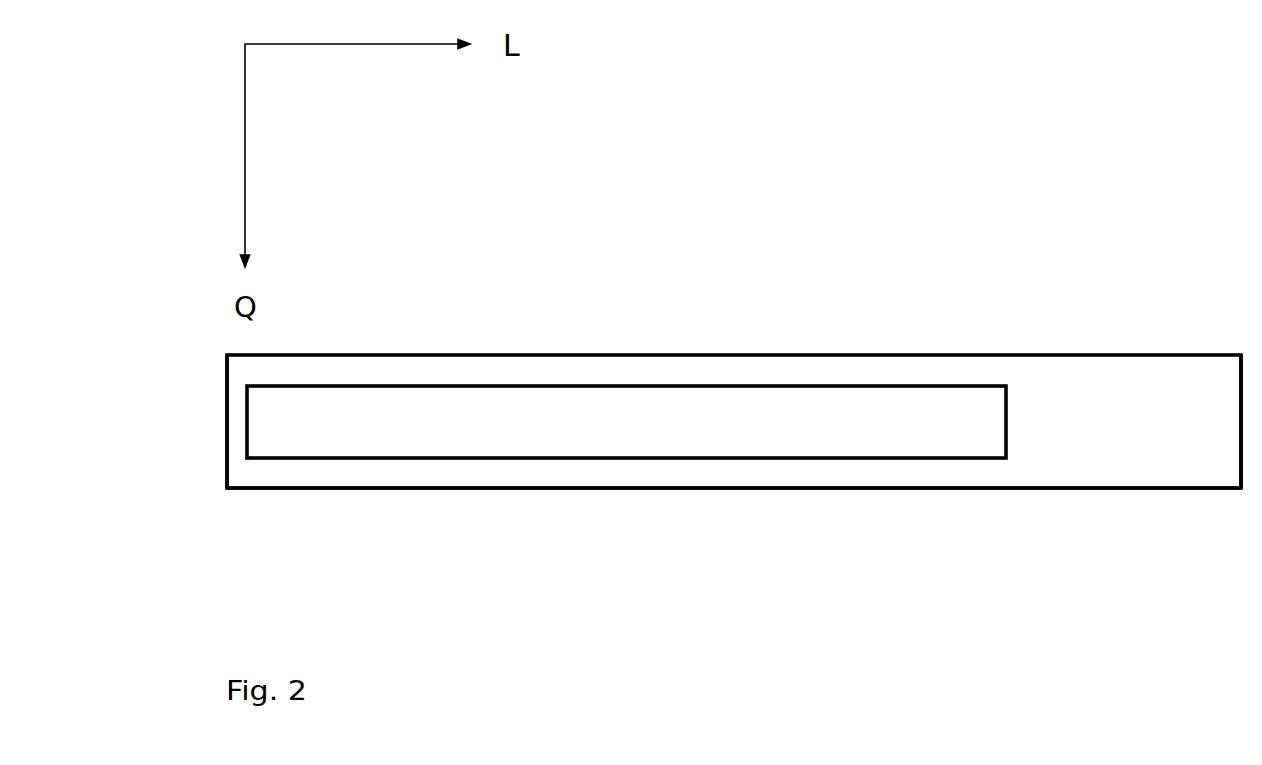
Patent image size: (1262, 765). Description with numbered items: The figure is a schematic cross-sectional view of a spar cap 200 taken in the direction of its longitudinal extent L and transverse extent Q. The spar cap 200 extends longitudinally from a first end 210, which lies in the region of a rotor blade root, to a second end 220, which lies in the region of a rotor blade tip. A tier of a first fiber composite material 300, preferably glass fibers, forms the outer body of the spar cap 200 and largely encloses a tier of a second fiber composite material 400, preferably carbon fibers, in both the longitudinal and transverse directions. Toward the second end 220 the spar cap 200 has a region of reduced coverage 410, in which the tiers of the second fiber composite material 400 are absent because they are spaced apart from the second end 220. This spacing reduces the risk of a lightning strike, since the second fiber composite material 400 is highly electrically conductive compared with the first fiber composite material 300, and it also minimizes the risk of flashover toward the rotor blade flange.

The spar cap 200 is at (1172, 312).
The first end 210 is at (228, 463).
The second end 220 is at (1240, 405).
The first fiber composite material 300 is at (625, 473).
The second fiber composite material 400 is at (977, 403).
The region of reduced coverage 410 is at (1067, 428).